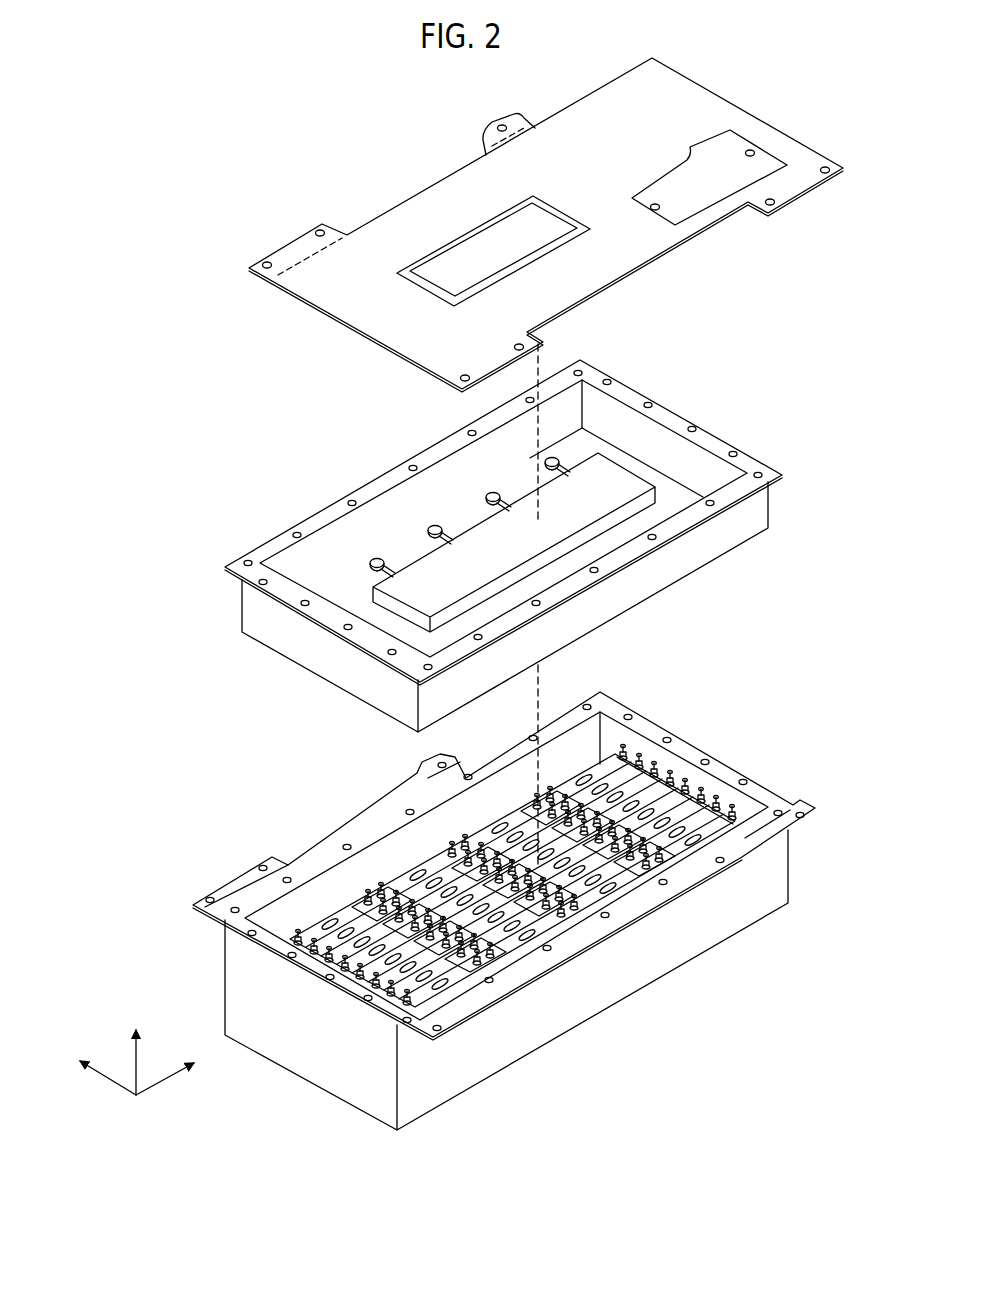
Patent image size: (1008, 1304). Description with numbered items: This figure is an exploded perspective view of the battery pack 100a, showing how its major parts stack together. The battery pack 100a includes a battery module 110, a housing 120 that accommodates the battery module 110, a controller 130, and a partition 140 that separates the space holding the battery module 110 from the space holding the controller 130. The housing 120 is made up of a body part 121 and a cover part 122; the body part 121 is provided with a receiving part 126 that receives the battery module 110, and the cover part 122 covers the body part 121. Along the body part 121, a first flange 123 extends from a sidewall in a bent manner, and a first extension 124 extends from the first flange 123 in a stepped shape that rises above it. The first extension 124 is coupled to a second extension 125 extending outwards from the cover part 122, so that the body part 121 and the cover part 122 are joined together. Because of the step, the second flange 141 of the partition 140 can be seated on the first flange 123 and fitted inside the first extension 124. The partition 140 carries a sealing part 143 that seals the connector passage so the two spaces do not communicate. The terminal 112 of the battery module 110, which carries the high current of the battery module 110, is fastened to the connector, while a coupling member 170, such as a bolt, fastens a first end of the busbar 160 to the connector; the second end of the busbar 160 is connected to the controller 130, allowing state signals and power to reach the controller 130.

The battery pack 100a is at (298, 95).
The battery module 110 is at (312, 930).
The terminal 112 is at (640, 761).
The housing 120 is at (97, 992).
The body part 121 is at (221, 992).
The cover part 122 is at (284, 321).
The first flange 123 is at (692, 860).
The first extension 124 is at (790, 825).
The second extension 125 is at (798, 188).
The receiving part 126 is at (589, 755).
The controller 130 is at (410, 602).
The partition 140 is at (318, 687).
The second flange 141 is at (288, 594).
The sealing part 143 is at (370, 558).
The busbar 160 is at (392, 562).
The coupling member 170 is at (372, 560).